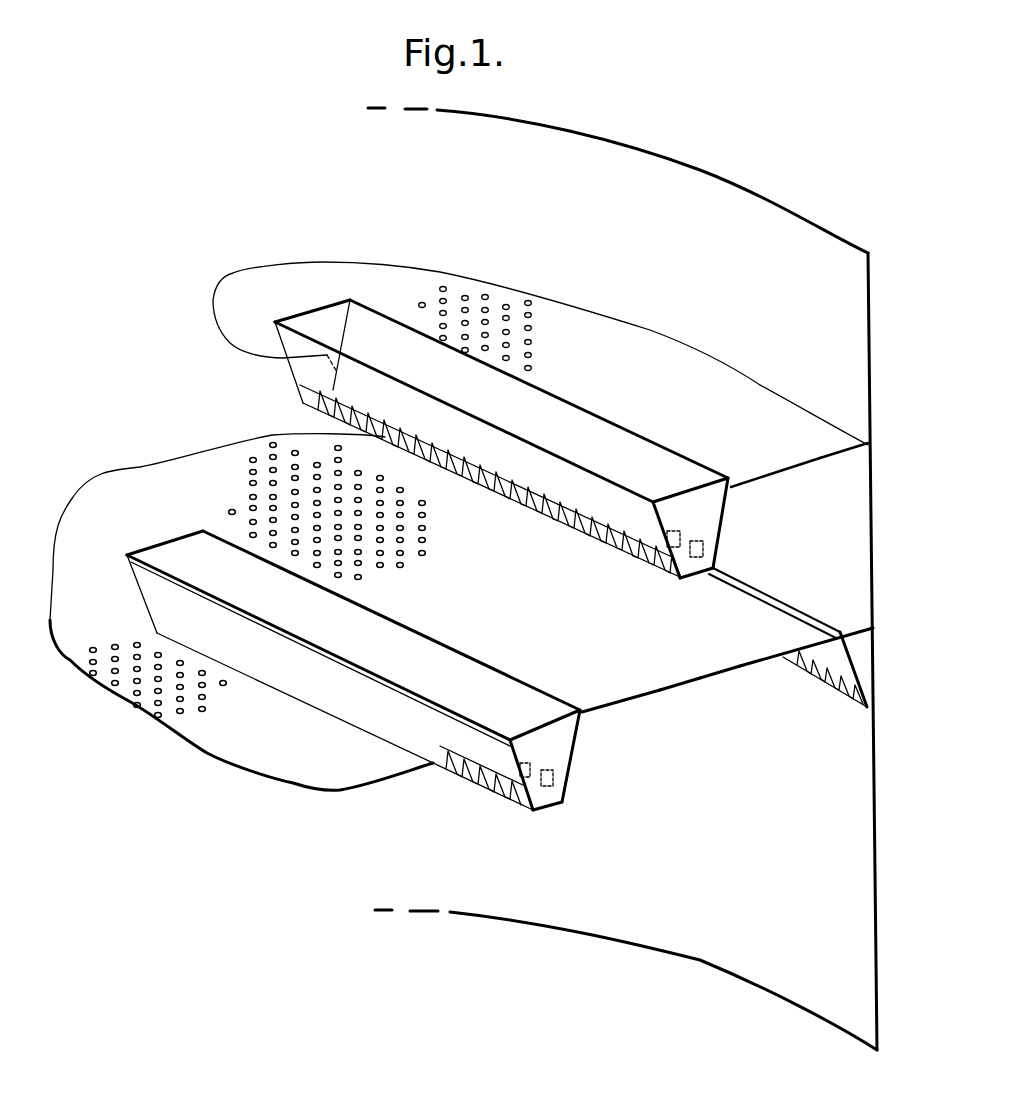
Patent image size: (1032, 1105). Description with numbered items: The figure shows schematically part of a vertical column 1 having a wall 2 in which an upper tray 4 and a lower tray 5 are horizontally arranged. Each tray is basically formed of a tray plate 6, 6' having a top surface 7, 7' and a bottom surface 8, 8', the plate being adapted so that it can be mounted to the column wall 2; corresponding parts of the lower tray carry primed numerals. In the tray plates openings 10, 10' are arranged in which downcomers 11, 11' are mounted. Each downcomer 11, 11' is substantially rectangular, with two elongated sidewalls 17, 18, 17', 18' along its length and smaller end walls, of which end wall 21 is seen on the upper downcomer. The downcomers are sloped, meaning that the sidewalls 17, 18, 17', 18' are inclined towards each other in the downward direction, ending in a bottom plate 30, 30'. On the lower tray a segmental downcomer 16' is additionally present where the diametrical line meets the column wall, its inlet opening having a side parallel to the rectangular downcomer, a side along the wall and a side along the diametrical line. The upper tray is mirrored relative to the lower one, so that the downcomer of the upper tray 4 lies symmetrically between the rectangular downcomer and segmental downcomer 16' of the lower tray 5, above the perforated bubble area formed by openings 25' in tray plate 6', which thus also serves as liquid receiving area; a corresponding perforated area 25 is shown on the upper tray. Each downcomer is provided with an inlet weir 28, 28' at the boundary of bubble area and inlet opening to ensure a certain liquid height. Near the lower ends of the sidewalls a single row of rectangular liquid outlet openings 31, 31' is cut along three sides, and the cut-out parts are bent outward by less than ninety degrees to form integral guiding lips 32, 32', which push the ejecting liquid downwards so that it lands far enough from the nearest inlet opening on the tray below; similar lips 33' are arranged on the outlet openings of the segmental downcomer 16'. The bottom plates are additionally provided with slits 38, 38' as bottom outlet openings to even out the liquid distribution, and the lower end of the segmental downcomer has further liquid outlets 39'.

The vertical column 1 is at (636, 579).
The column wall 2 is at (872, 364).
The upper tray 4 is at (822, 423).
The lower tray 5 is at (461, 612).
The tray plate 6 is at (862, 440).
The top surface 7 is at (510, 332).
The bottom surface 8 is at (778, 488).
The opening 10 is at (483, 416).
The downcomer 11 is at (539, 389).
The sidewall 17 is at (271, 362).
The sidewall 18 is at (464, 366).
The end wall 21 is at (320, 320).
The perforated area 25 is at (475, 307).
The inlet weir 28 is at (297, 302).
The bottom plate 30 is at (665, 586).
The liquid outlet opening 31 is at (490, 472).
The guiding lip 32 is at (533, 500).
The slit 38 is at (491, 494).
The tray plate 6' is at (718, 692).
The top surface 7' is at (680, 704).
The bottom surface 8' is at (621, 719).
The opening 10' is at (524, 692).
The downcomer 11' is at (392, 620).
The segmental downcomer 16' is at (849, 676).
The sidewall 17' is at (220, 643).
The sidewall 18' is at (318, 647).
The openings 25' is at (249, 580).
The inlet weir 28' is at (424, 646).
The bottom plate 30' is at (527, 827).
The liquid outlet opening 31' is at (490, 751).
The guiding lip 32' is at (511, 785).
The guiding lip 33' is at (820, 692).
The slit 38' is at (345, 730).
The further liquid outlets 39' is at (852, 682).